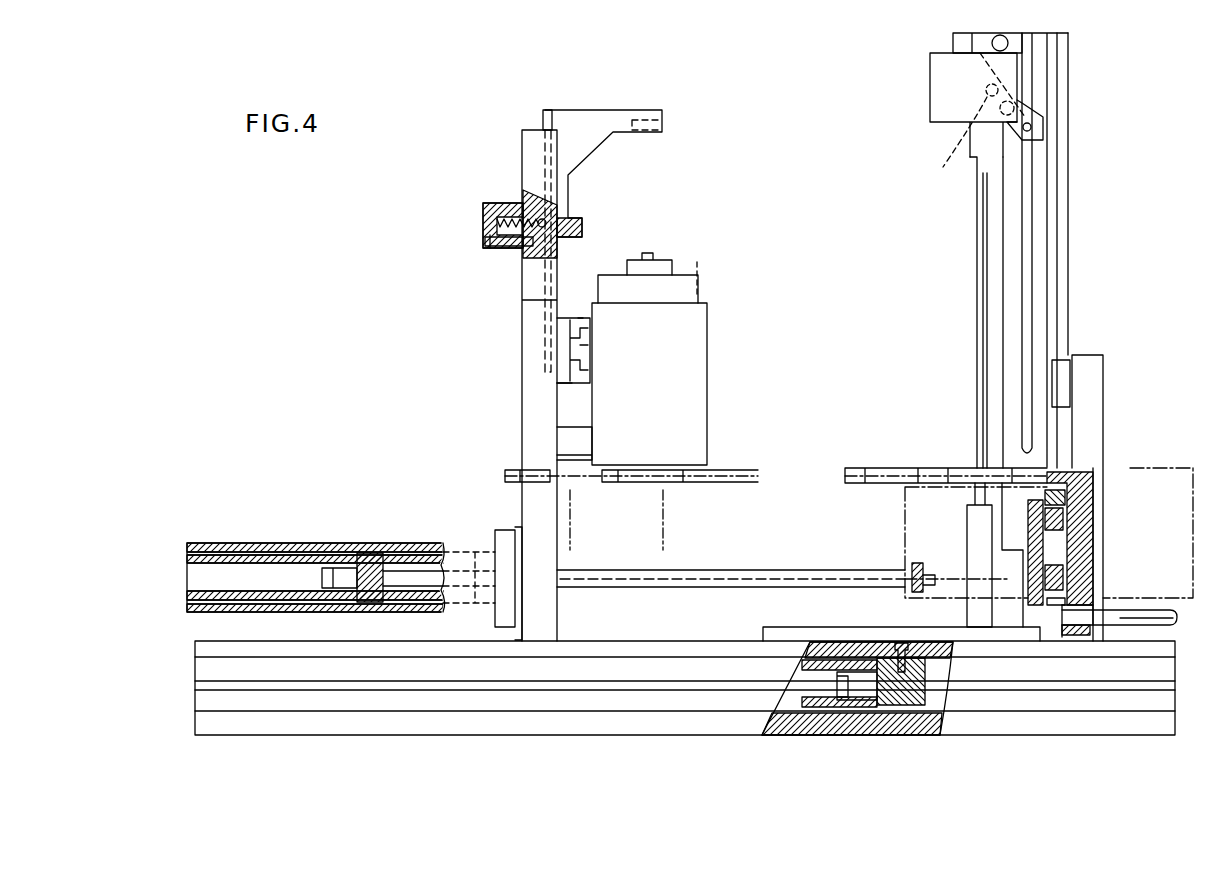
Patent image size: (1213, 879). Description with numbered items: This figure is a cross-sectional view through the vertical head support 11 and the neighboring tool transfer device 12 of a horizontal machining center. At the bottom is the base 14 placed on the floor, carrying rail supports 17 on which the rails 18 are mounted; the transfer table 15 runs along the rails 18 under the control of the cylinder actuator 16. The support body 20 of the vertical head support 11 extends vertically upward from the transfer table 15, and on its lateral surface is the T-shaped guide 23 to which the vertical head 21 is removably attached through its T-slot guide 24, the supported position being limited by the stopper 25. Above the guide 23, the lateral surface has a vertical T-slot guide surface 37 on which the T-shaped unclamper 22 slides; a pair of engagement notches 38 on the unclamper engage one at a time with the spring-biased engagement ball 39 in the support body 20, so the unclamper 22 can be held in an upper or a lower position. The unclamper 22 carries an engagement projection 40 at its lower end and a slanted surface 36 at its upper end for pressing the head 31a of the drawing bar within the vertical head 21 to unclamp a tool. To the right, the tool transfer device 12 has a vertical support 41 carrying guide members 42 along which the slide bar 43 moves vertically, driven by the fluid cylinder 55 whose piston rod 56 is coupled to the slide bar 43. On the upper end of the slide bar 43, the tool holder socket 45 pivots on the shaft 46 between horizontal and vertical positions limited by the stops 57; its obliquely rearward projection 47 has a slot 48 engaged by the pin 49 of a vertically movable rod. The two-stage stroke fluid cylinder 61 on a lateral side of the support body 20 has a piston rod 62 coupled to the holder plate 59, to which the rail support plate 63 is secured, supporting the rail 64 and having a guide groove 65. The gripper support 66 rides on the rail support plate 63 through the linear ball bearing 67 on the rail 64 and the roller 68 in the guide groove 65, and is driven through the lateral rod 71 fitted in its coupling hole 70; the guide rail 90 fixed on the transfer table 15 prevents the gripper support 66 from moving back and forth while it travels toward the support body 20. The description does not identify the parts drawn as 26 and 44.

The vertical head support 11 is at (458, 258).
The tool transfer device 12 is at (1110, 105).
The base 14 is at (372, 735).
The transfer table 15 is at (215, 650).
The cylinder actuator 16 is at (890, 735).
The rail supports 17 is at (512, 705).
The rails 18 is at (575, 690).
The support body 20 is at (530, 420).
The vertical head 21 is at (698, 335).
The unclamper 22 is at (610, 112).
The T-shaped guide 23 is at (565, 352).
The T-slot guide 24 is at (585, 375).
The stopper 25 is at (580, 318).
The support 26 is at (567, 447).
The head of drawing bar 31a is at (655, 255).
The slanted surface 36 is at (662, 125).
The T-slot guide surface 37 is at (530, 248).
The engagement notches 38 is at (550, 105).
The spring-biased engagement ball 39 is at (494, 200).
The engagement projection 40 is at (580, 237).
The vertical support 41 is at (1085, 435).
The guide members 42 is at (1062, 383).
The slide bar 43 is at (1040, 228).
The column 44 is at (1065, 280).
The tool holder socket 45 is at (940, 95).
The shaft 46 is at (963, 138).
The projection 47 is at (1022, 118).
The slot 48 is at (1020, 105).
The pin 49 is at (1045, 130).
The fluid cylinder 55 is at (975, 520).
The piston rod 56 is at (980, 312).
The stops 57 is at (968, 48).
The holder plate 59 is at (905, 575).
The two-stage stroke fluid cylinder 61 is at (240, 543).
The piston rod 62 is at (710, 580).
The rail support plate 63 is at (1030, 600).
The rail 64 is at (1085, 510).
The guide groove 65 is at (1065, 620).
The gripper support 66 is at (875, 470).
The linear ball bearing 67 is at (1060, 515).
The roller 68 is at (1075, 590).
The coupling hole 70 is at (1105, 615).
The lateral rod 71 is at (1175, 616).
The guide rail 90 is at (780, 633).